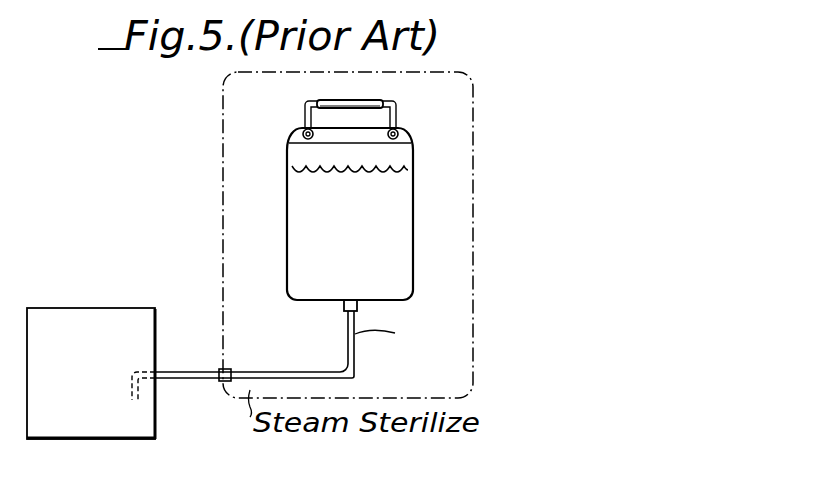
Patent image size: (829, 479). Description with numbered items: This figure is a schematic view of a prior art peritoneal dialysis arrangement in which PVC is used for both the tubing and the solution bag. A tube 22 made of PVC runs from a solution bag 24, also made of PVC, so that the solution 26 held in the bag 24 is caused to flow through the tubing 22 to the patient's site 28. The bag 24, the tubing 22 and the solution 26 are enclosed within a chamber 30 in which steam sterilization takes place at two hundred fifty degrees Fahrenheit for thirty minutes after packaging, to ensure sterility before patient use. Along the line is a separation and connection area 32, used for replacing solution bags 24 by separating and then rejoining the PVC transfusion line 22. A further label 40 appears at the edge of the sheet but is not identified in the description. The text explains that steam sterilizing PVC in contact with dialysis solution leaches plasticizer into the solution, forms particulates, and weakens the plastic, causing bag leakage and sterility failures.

The tube 22 is at (207, 337).
The solution bag 24 is at (412, 153).
The solution 26 is at (390, 218).
The patient's site 28 is at (110, 430).
The chamber 30 is at (452, 338).
The separation and connection area 32 is at (222, 382).
The reference 40 is at (565, 475).